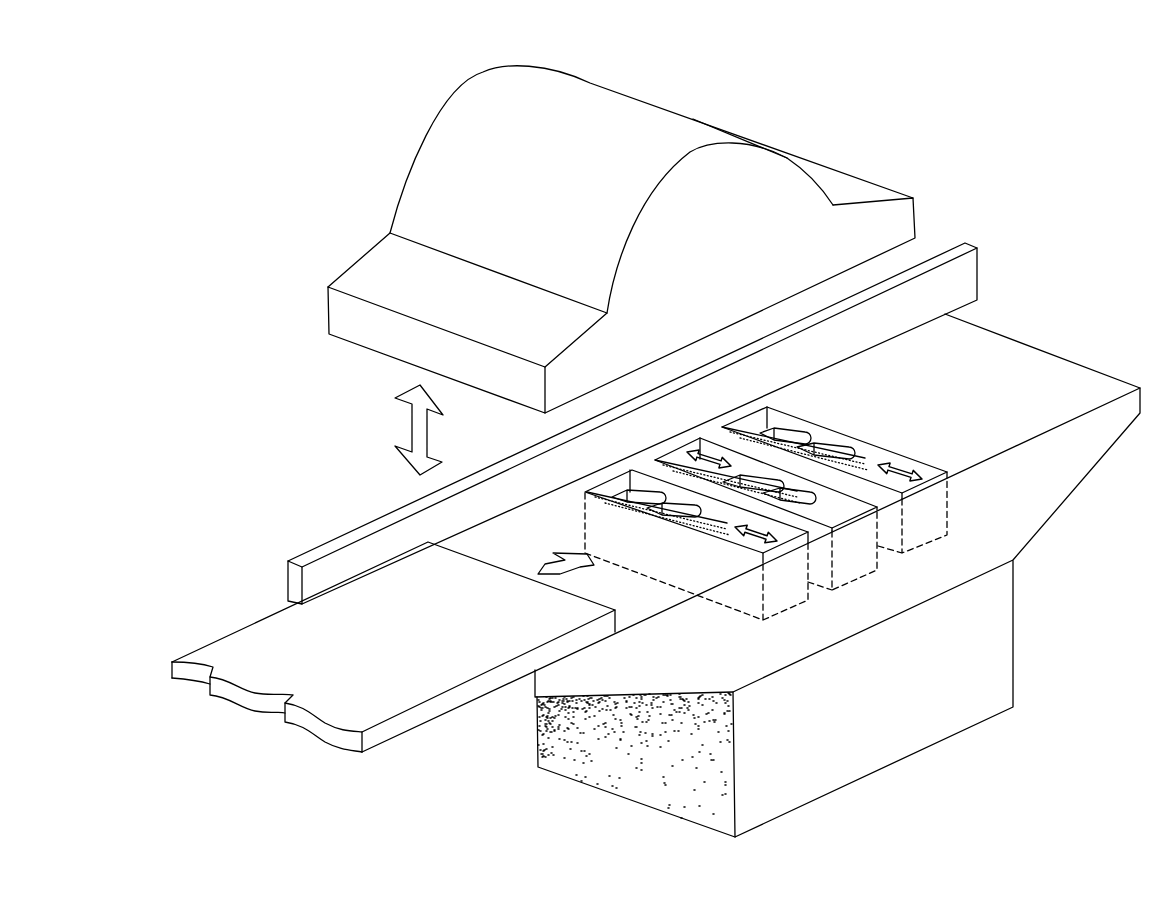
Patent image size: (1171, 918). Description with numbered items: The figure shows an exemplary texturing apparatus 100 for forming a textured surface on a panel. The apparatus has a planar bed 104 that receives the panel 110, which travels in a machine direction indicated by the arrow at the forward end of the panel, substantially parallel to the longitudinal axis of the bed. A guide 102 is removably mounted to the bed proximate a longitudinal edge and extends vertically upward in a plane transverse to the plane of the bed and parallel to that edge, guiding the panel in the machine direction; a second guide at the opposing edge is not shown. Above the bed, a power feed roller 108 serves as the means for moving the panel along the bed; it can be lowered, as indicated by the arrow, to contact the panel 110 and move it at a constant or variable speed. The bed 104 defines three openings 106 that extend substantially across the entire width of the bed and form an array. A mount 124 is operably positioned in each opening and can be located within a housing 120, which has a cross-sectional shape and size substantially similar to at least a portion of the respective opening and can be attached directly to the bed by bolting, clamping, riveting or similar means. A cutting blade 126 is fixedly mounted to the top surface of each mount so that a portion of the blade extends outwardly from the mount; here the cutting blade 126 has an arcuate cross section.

The texturing apparatus 100 is at (322, 136).
The guide 102 is at (947, 280).
The planar bed 104 is at (1003, 380).
The opening 106 is at (918, 468).
The power feed roller 108 is at (478, 108).
The panel 110 is at (285, 657).
The housing 120 is at (793, 603).
The mount 124 is at (853, 458).
The cutting blade 126 is at (782, 433).